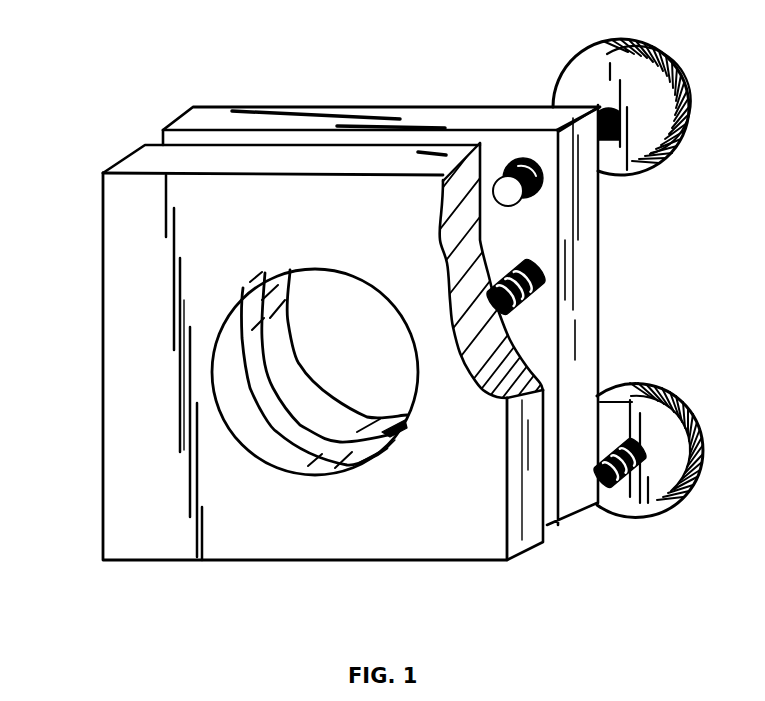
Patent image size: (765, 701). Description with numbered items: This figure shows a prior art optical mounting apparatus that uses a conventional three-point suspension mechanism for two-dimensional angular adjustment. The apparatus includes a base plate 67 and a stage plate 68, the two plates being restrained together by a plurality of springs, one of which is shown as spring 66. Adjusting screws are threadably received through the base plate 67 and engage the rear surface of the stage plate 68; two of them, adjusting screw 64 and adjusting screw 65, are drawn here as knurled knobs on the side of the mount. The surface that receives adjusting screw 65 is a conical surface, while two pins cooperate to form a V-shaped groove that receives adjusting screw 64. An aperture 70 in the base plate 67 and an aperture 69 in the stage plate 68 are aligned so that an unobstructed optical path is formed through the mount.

The adjusting screw 64 is at (657, 107).
The adjusting screw 65 is at (673, 498).
The spring 66 is at (527, 262).
The base plate 67 is at (598, 325).
The stage plate 68 is at (123, 472).
The aperture 69 is at (216, 354).
The aperture 70 is at (283, 310).